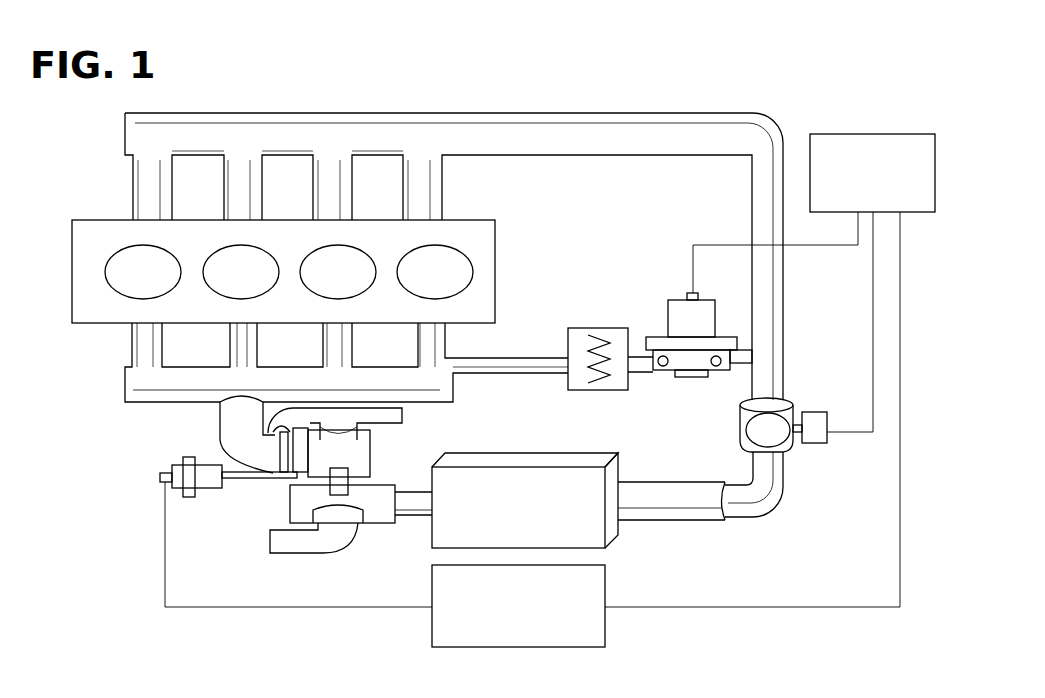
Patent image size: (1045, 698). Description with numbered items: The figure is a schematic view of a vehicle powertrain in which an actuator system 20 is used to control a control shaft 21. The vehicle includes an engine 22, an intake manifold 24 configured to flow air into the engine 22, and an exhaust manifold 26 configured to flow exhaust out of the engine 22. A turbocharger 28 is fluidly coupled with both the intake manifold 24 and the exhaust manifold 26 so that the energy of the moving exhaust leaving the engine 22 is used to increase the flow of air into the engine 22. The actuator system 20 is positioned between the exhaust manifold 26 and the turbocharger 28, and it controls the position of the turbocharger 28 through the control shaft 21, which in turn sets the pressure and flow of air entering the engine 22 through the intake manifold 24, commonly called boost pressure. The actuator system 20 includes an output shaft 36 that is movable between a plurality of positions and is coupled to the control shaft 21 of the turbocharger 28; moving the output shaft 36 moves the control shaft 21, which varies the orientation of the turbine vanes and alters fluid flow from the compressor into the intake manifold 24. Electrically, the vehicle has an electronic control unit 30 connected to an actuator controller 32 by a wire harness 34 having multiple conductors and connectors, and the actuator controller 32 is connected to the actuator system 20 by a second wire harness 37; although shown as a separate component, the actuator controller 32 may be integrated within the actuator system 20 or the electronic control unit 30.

The actuator system 20 is at (172, 440).
The control shaft 21 is at (283, 452).
The engine 22 is at (100, 237).
The intake manifold 24 is at (248, 135).
The exhaust manifold 26 is at (153, 385).
The turbocharger 28 is at (354, 477).
The electronic control unit 30 is at (865, 134).
The actuator controller 32 is at (605, 627).
The wire harness 34 is at (903, 358).
The output shaft 36 is at (232, 483).
The wire harness 37 is at (230, 608).